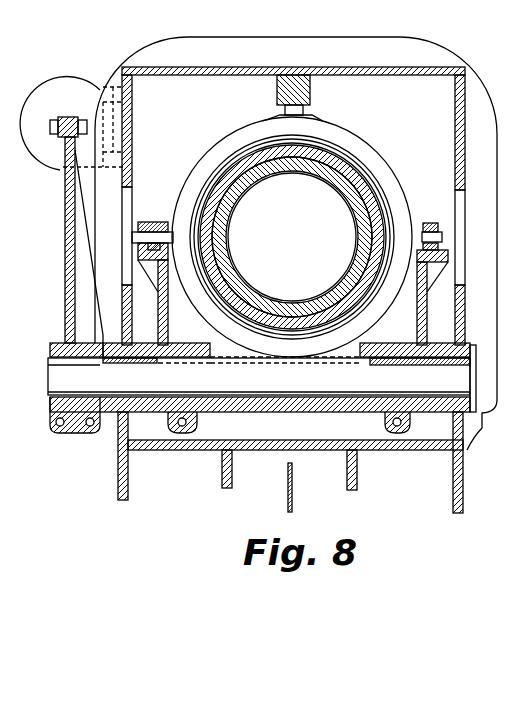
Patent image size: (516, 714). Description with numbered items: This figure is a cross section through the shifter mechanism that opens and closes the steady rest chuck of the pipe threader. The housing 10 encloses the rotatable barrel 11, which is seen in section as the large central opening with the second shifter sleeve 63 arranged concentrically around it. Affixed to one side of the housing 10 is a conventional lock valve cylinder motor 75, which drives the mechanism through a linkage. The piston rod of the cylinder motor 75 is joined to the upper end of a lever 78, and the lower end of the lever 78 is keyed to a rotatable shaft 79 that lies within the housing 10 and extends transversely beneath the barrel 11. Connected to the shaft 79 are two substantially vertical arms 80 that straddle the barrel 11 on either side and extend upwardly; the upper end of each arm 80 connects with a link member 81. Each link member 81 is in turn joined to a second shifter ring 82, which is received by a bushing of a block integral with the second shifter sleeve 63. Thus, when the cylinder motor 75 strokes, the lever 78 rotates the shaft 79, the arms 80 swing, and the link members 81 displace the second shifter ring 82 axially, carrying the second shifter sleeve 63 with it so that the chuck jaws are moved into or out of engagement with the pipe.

The housing 10 is at (160, 45).
The rotatable barrel 11 is at (242, 189).
The second shifter sleeve 63 is at (345, 160).
The lock valve cylinder motor 75 is at (50, 94).
The lever 78 is at (65, 193).
The rotatable shaft 79 is at (48, 372).
The vertical arms 80 is at (158, 330).
The link member 81 is at (156, 222).
The second shifter ring 82 is at (383, 164).